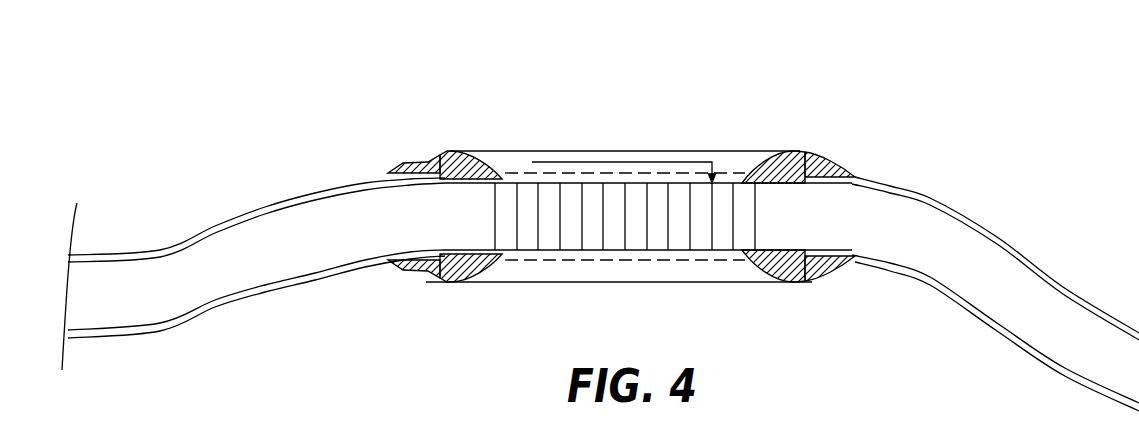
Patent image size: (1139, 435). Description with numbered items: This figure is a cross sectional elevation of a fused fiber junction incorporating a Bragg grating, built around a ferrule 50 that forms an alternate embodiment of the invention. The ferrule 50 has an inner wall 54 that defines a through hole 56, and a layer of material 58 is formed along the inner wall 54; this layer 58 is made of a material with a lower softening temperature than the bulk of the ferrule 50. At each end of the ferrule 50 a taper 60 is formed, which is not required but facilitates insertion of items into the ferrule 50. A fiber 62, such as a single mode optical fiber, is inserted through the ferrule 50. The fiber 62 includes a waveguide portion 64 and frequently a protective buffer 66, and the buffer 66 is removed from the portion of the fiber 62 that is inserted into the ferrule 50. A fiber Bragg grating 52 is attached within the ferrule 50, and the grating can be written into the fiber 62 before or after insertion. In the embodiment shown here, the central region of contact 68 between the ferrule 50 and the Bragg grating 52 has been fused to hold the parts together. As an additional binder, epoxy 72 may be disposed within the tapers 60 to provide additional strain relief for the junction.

The ferrule 50 is at (680, 140).
The fiber Bragg grating 52 is at (933, 290).
The inner wall 54 is at (537, 180).
The through hole 56 is at (748, 172).
The layer of material 58 is at (606, 260).
The taper 60 is at (442, 262).
The fiber 62 is at (1043, 359).
The waveguide portion 64 is at (448, 210).
The protective buffer 66 is at (1042, 264).
The central region of contact 68 is at (602, 162).
The epoxy 72 is at (403, 262).